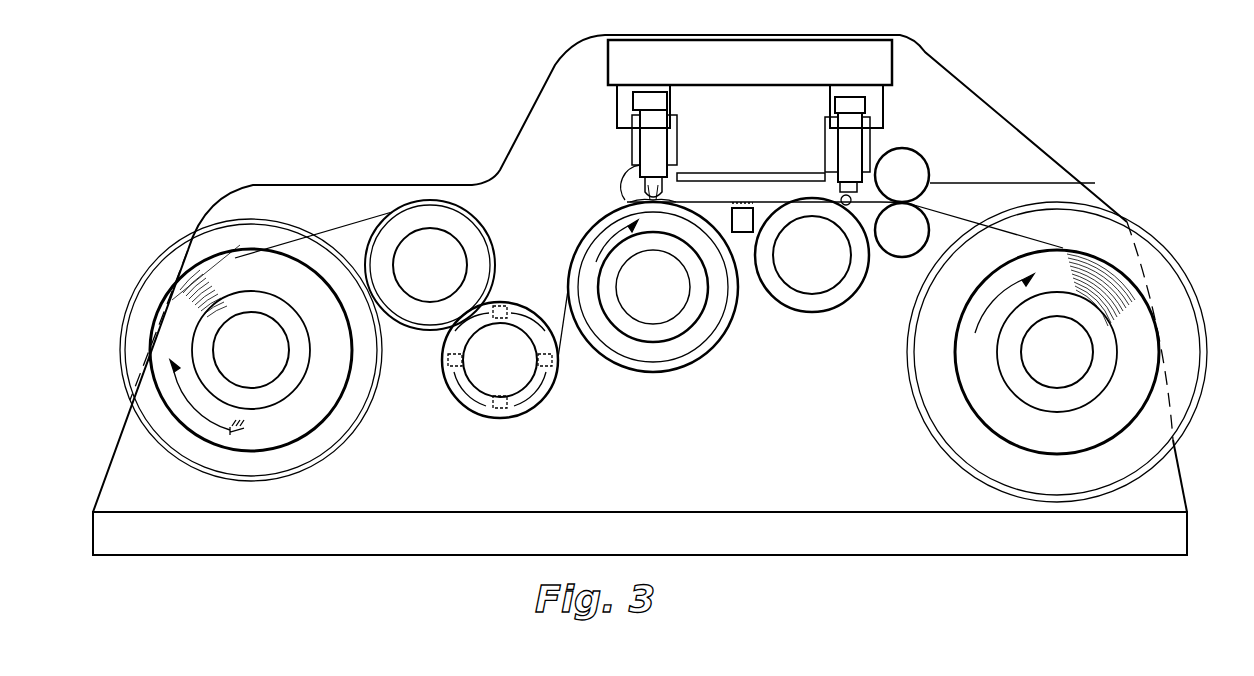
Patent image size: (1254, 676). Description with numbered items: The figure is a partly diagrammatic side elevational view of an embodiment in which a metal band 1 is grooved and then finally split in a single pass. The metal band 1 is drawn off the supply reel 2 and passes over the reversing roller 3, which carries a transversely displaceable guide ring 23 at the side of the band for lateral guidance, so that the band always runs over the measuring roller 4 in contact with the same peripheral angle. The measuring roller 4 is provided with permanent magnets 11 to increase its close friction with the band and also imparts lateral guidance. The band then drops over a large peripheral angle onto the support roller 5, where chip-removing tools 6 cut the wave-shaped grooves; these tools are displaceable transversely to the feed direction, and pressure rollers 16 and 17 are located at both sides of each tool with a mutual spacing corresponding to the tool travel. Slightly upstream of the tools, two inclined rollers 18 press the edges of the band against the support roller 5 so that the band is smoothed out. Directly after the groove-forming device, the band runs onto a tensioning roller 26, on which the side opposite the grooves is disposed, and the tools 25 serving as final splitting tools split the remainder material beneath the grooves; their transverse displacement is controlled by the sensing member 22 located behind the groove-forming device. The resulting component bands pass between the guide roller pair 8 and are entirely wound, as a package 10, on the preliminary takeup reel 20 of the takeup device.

The metal band 1 is at (318, 232).
The supply reel 2 is at (237, 230).
The reversing roller 3 is at (410, 222).
The measuring roller 4 is at (525, 397).
The support roller 5 is at (662, 352).
The chip-removing tools 6 is at (630, 202).
The guide roller pair 8 is at (915, 172).
The package 10 is at (1125, 312).
The permanent magnets 11 is at (453, 367).
The pressure roller 16 is at (640, 188).
The pressure roller 17 is at (640, 185).
The inclined rollers 18 is at (625, 200).
The preliminary takeup reel 20 is at (1090, 212).
The sensing member 22 is at (742, 215).
The guide ring 23 is at (433, 203).
The final splitting tools 25 is at (843, 198).
The tensioning roller 26 is at (822, 275).